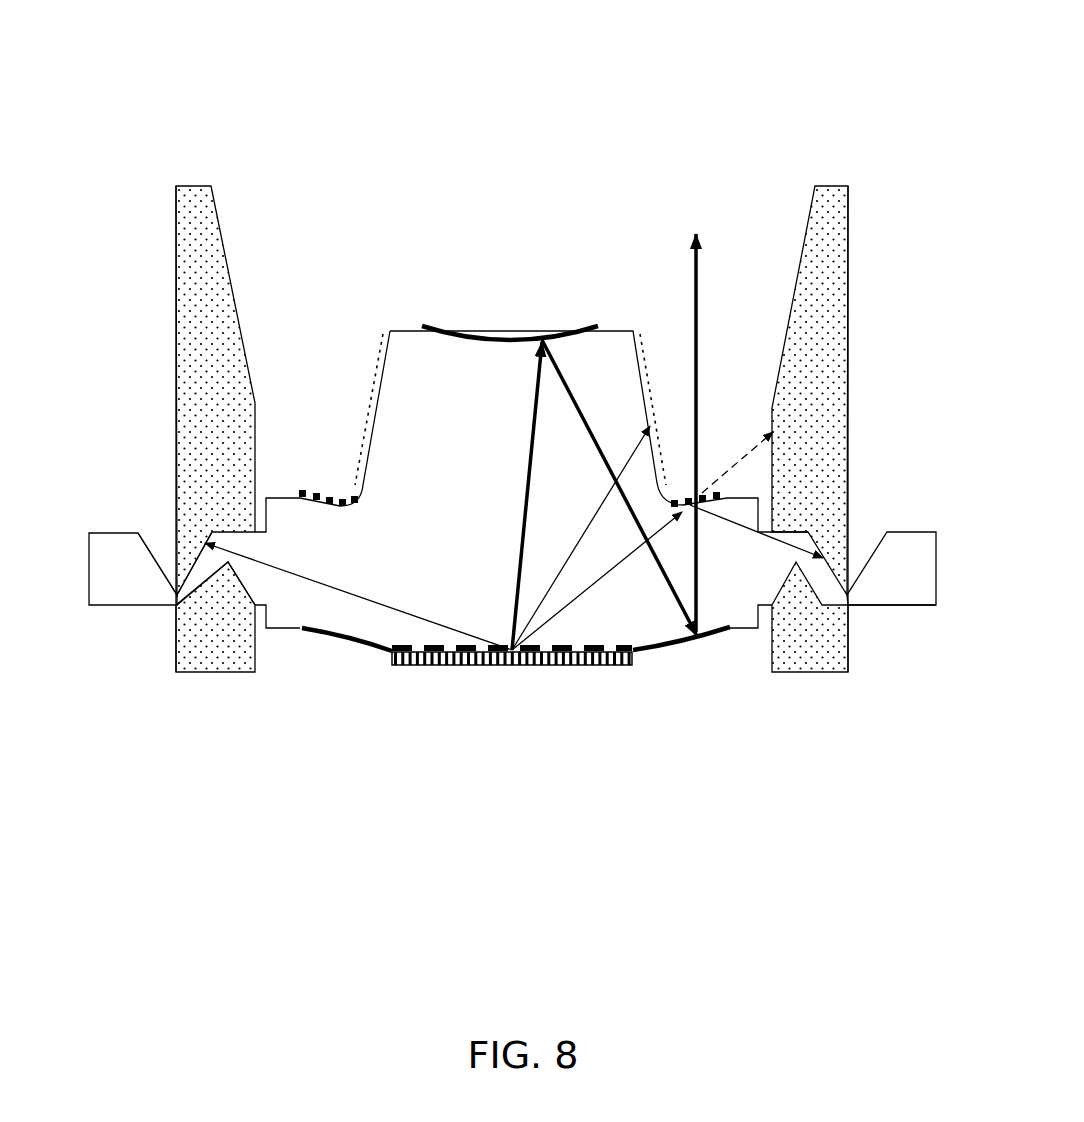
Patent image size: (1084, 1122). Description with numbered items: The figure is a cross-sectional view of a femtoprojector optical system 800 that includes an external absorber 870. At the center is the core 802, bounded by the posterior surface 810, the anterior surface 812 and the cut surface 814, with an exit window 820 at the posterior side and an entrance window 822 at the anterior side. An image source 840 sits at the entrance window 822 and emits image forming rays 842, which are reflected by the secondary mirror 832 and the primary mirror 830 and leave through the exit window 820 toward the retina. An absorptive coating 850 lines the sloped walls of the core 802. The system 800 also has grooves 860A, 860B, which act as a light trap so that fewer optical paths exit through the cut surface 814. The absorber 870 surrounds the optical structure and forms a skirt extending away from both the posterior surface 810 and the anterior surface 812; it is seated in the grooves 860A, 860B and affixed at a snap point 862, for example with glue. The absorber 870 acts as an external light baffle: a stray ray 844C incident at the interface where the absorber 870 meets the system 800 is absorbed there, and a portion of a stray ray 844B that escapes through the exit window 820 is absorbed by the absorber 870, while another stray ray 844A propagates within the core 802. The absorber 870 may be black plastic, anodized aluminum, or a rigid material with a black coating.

The femtoprojector optical system 800 is at (322, 100).
The core 802 is at (513, 479).
The posterior surface 810 is at (793, 530).
The anterior surface 812 is at (857, 612).
The cut surface 814 is at (82, 560).
The exit window 820 is at (645, 690).
The entrance window 822 is at (470, 645).
The primary mirror 830 is at (375, 655).
The secondary mirror 832 is at (440, 325).
The image source 840 is at (465, 675).
The image forming rays 842 is at (562, 364).
The stray ray 844A is at (557, 592).
The stray ray 844B is at (720, 462).
The stray ray 844C is at (337, 595).
The absorptive coating 850 is at (368, 352).
The groove 860A is at (173, 572).
The groove 860B is at (227, 580).
The snap point 862 is at (202, 585).
The absorber 870 is at (873, 152).